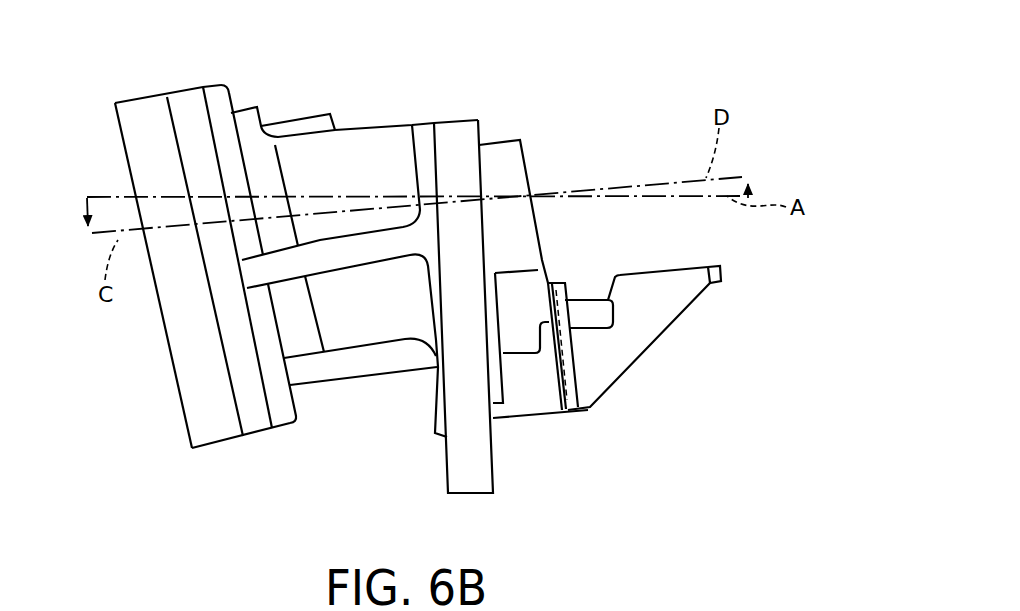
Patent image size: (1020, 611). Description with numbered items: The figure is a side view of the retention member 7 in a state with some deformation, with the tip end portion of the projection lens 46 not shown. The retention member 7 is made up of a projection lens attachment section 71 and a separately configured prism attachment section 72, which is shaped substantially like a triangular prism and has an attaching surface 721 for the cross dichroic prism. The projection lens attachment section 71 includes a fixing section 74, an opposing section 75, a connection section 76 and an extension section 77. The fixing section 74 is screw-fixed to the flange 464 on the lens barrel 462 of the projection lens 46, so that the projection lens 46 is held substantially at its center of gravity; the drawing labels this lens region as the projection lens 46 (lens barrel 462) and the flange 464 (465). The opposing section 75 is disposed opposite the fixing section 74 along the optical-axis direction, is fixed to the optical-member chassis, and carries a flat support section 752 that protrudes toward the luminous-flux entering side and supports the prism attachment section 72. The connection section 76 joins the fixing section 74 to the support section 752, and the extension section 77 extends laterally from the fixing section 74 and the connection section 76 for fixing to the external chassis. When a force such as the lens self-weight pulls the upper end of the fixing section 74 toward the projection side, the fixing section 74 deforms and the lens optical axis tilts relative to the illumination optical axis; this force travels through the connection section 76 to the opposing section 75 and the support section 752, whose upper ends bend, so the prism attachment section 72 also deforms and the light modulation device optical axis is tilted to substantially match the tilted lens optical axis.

The retention member 7 is at (515, 286).
The projection lens 46 is at (183, 275).
The lens barrel 462 is at (213, 422).
The flange 464 is at (281, 302).
The frame portion 465 is at (262, 422).
The projection lens attachment section 71 is at (275, 108).
The prism attachment section 72 is at (673, 332).
The attaching surface 721 is at (673, 265).
The fixing section 74 is at (212, 86).
The opposing section 75 is at (480, 480).
The support section 752 is at (523, 408).
The connection section 76 is at (385, 330).
The extension section 77 is at (330, 262).